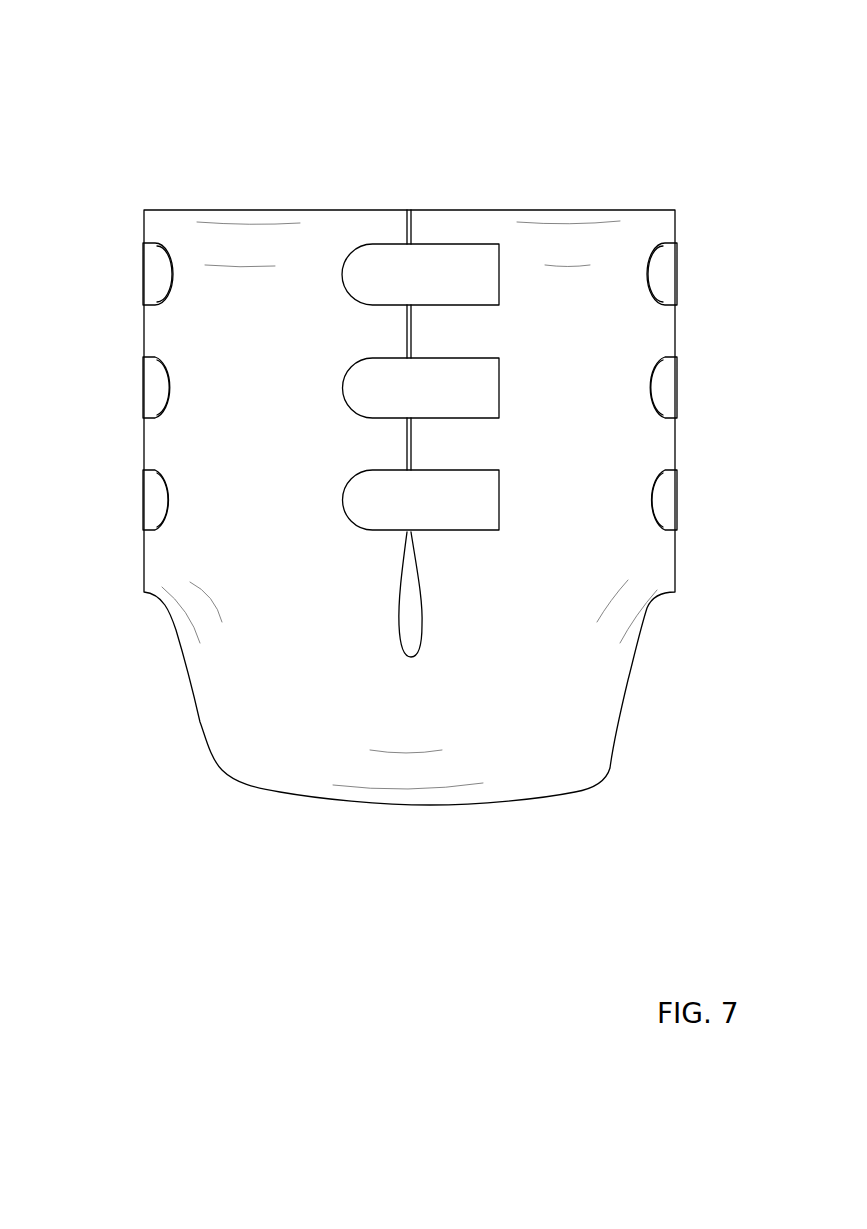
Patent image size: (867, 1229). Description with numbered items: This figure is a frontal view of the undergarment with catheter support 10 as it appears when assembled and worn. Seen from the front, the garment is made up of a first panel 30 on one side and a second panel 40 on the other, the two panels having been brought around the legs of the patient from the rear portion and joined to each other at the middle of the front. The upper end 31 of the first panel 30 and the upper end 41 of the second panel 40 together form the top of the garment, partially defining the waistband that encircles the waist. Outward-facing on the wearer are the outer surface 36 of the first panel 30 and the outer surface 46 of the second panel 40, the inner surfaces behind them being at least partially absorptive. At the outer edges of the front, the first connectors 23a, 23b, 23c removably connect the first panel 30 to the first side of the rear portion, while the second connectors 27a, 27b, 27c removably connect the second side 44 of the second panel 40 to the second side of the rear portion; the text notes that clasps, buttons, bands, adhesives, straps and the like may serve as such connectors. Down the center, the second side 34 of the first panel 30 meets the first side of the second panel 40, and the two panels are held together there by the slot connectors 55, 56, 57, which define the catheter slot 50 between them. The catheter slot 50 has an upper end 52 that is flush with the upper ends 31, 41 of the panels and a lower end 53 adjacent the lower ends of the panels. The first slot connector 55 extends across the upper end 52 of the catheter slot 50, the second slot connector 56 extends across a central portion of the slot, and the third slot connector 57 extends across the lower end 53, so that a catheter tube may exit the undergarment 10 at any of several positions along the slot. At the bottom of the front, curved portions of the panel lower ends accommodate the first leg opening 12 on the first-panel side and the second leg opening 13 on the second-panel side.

The undergarment with catheter support 10 is at (139, 80).
The first leg opening 12 is at (193, 687).
The second leg opening 13 is at (630, 670).
The first connector 23a is at (153, 273).
The first connector 23b is at (152, 387).
The first connector 23c is at (155, 498).
The second connector 27a is at (663, 268).
The second connector 27b is at (663, 383).
The second connector 27c is at (663, 500).
The first panel 30 is at (248, 316).
The upper end 31 is at (263, 210).
The second side 34 is at (405, 227).
The outer surface 36 is at (255, 427).
The second panel 40 is at (583, 317).
The upper end 41 is at (543, 210).
The second side 44 is at (412, 237).
The outer surface 46 is at (553, 507).
The catheter slot 50 is at (407, 445).
The upper end 52 is at (408, 210).
The lower end 53 is at (411, 657).
The first slot connector 55 is at (432, 271).
The second slot connector 56 is at (448, 392).
The third slot connector 57 is at (438, 502).